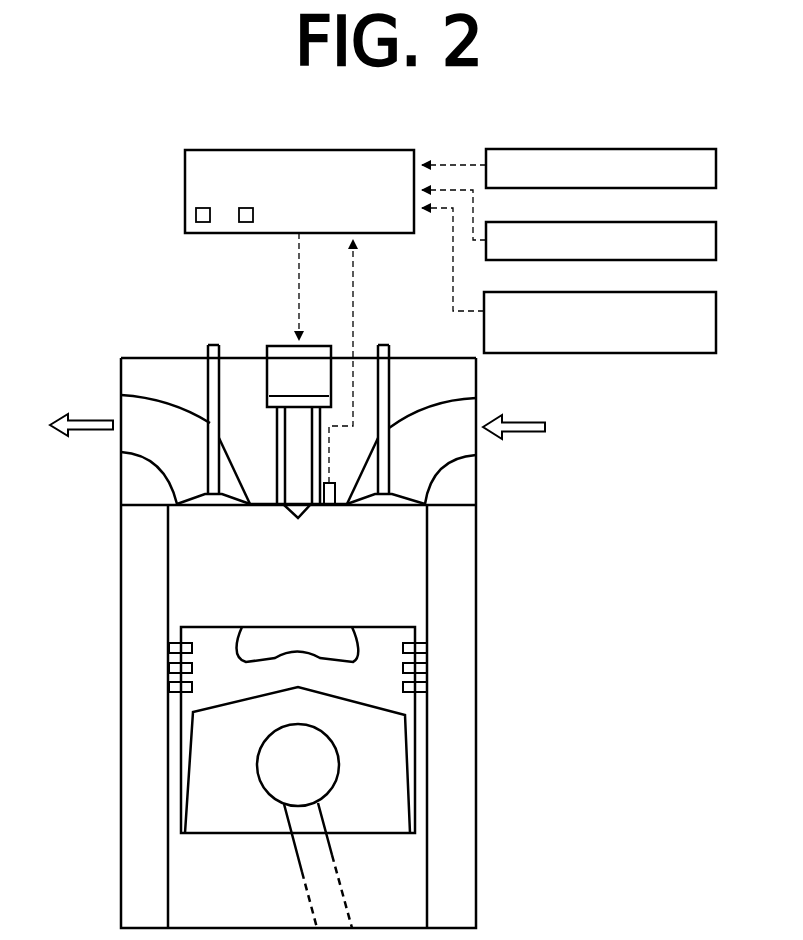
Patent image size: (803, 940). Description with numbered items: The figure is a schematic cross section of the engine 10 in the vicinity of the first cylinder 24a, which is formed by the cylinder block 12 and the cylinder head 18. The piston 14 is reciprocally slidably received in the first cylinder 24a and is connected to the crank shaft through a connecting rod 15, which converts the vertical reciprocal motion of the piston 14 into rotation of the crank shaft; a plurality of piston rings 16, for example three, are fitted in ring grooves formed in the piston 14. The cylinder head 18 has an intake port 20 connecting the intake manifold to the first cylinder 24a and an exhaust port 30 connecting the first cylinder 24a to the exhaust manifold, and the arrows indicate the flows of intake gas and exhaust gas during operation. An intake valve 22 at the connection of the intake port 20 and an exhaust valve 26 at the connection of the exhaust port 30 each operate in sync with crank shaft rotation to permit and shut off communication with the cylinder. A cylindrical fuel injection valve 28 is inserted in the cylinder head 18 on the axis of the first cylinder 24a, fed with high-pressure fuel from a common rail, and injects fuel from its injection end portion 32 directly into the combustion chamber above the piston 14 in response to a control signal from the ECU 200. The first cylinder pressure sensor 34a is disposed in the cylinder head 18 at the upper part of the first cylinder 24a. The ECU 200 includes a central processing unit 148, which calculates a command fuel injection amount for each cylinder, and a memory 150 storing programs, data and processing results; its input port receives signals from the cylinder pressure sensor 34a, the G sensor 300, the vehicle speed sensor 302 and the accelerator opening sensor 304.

The engine 10 is at (80, 316).
The cylinder block 12 is at (463, 900).
The piston 14 is at (405, 703).
The connecting rod 15 is at (330, 853).
The piston rings 16 is at (433, 643).
The cylinder head 18 is at (465, 493).
The intake port 20 is at (465, 445).
The intake valve 22 is at (384, 385).
The first cylinder 24a is at (405, 604).
The exhaust valve 26 is at (210, 383).
The fuel injection valve 28 is at (287, 345).
The exhaust port 30 is at (130, 443).
The injection end portion 32 is at (333, 508).
The first cylinder pressure sensor 34a is at (310, 508).
The central processing unit 148 is at (203, 222).
The memory 150 is at (246, 222).
The ECU 200 is at (338, 150).
The G sensor 300 is at (636, 149).
The vehicle speed sensor 302 is at (636, 222).
The accelerator opening sensor 304 is at (636, 292).